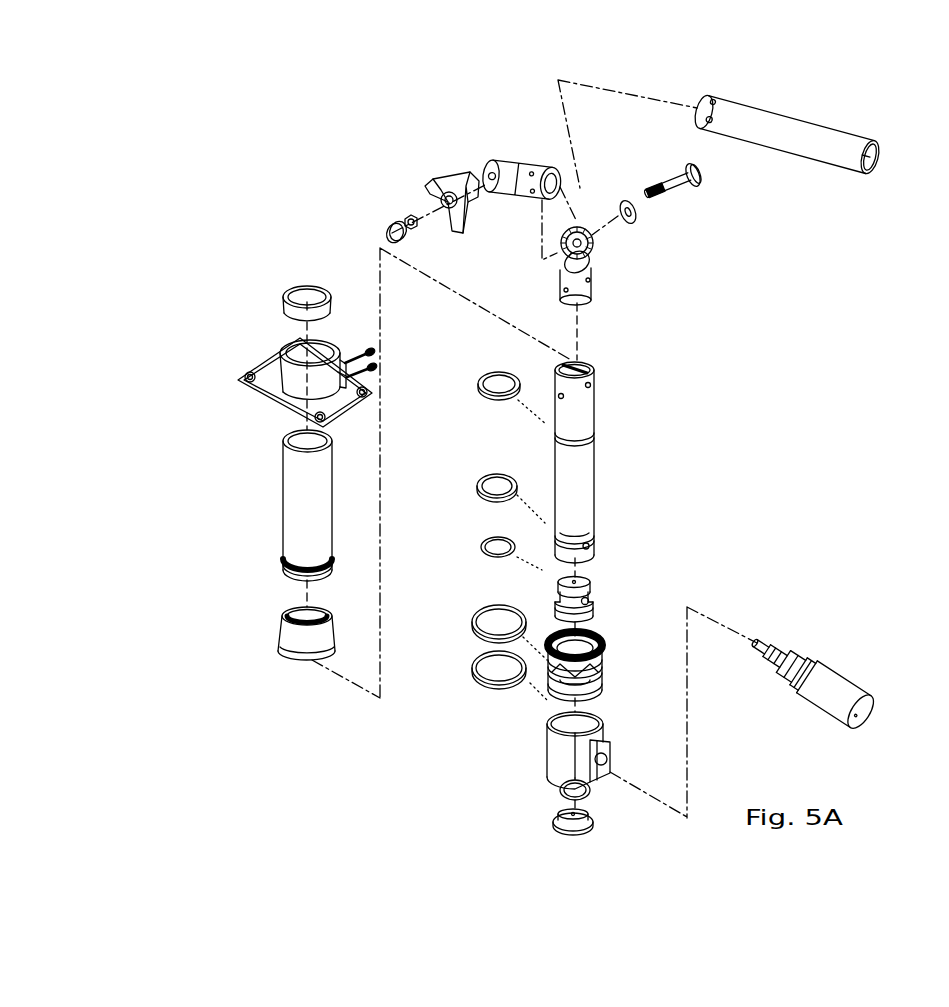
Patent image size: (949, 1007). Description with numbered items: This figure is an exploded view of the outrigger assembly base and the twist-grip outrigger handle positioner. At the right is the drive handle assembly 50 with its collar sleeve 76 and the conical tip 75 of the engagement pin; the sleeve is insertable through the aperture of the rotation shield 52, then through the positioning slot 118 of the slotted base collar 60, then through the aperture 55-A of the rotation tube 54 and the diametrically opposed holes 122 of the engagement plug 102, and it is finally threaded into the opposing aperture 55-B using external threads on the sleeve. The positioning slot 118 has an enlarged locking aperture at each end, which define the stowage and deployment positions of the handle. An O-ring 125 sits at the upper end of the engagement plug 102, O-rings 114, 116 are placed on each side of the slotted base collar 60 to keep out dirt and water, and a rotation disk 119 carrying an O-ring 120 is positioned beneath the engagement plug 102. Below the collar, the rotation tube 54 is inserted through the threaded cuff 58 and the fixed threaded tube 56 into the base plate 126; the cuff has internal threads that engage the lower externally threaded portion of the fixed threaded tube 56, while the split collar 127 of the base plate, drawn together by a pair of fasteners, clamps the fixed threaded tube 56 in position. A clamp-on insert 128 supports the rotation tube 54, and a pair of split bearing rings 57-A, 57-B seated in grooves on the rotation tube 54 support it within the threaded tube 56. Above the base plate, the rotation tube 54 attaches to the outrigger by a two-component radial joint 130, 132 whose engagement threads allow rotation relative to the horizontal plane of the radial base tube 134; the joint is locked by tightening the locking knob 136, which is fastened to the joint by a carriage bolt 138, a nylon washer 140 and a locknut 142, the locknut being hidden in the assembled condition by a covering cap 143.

The drive handle assembly 50 is at (850, 678).
The rotation shield 52 is at (607, 722).
The rotation tube 54 is at (595, 475).
The aperture 55-A is at (593, 545).
The opposing aperture 55-B is at (567, 532).
The fixed threaded tube 56 is at (280, 502).
The split bearing ring 57-A is at (482, 373).
The split bearing ring 57-B is at (478, 478).
The threaded cuff 58 is at (273, 638).
The slotted base collar 60 is at (547, 703).
The conical tip 75 is at (760, 642).
The collar sleeve 76 is at (772, 643).
The engagement plug 102 is at (592, 583).
The O-ring 114 is at (472, 660).
The O-ring 116 is at (472, 612).
The positioning slot 118 is at (588, 677).
The rotation disk 119 is at (552, 823).
The O-ring 120 is at (555, 790).
The hole 122 is at (592, 608).
The O-ring 125 is at (482, 540).
The base plate 126 is at (252, 365).
The split collar 127 is at (327, 360).
The clamp-on insert 128 is at (280, 287).
The radial joint component 130 is at (595, 287).
The radial joint component 132 is at (493, 148).
The radial base tube 134 is at (823, 122).
The locking knob 136 is at (435, 178).
The carriage bolt 138 is at (705, 177).
The nylon washer 140 is at (643, 223).
The locknut 142 is at (408, 212).
The covering cap 143 is at (388, 223).